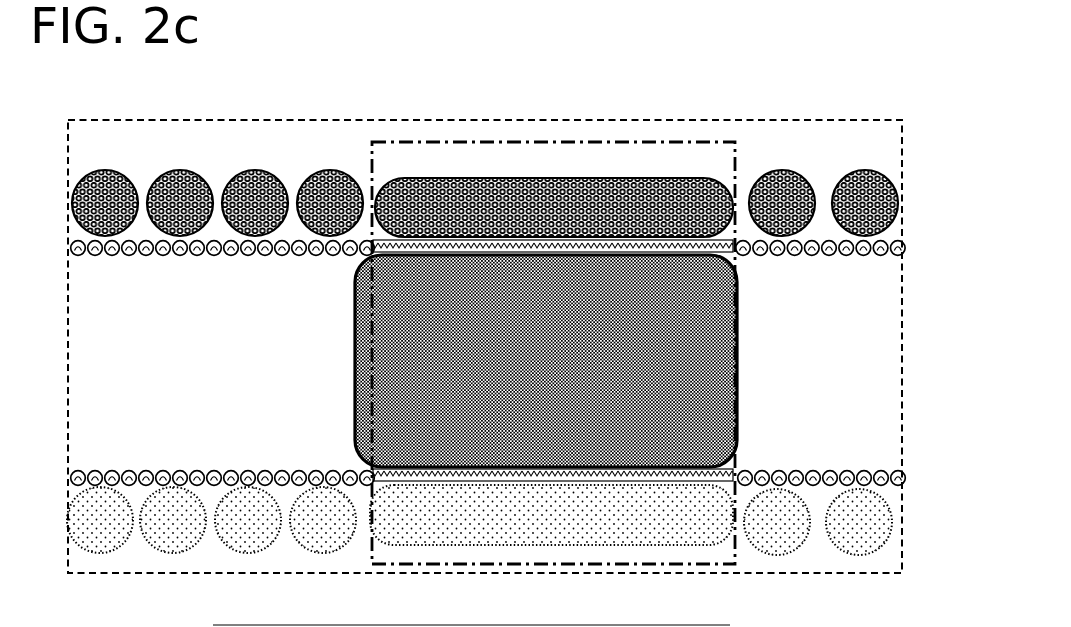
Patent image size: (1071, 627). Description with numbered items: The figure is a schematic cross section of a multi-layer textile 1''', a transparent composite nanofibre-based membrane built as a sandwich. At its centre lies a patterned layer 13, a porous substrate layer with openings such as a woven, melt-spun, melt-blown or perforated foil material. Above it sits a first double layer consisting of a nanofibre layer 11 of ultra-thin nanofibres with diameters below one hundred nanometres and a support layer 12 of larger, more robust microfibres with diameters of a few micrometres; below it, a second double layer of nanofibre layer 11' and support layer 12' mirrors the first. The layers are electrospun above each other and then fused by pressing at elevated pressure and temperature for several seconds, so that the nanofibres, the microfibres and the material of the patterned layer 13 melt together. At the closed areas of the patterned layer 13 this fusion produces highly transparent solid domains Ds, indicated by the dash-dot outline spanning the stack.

The multi-layer textile 1''' is at (506, 286).
The solid domains Ds is at (631, 140).
The nanofibre layer 11 is at (488, 168).
The support layer 12 is at (485, 159).
The patterned layer 13 is at (587, 383).
The nanofibre layer 11' is at (488, 546).
The support layer 12' is at (479, 554).